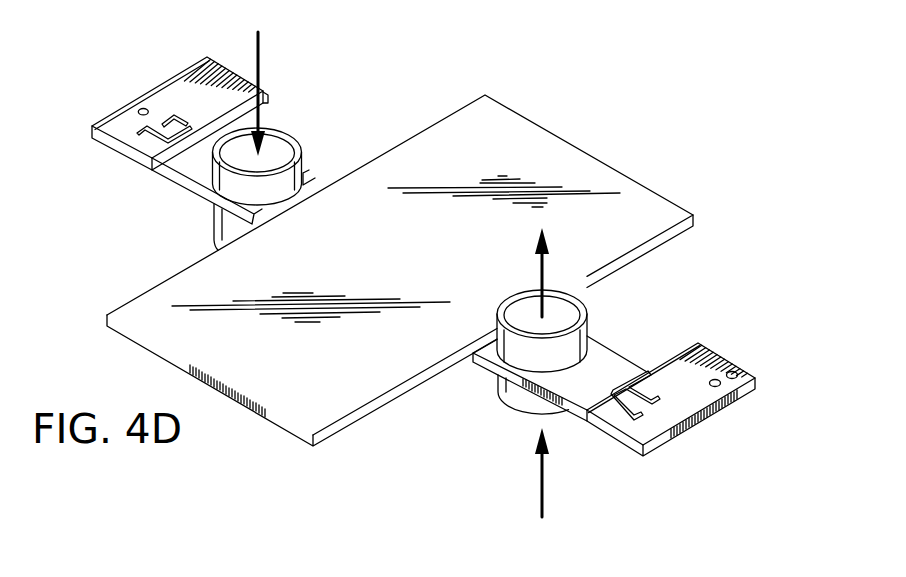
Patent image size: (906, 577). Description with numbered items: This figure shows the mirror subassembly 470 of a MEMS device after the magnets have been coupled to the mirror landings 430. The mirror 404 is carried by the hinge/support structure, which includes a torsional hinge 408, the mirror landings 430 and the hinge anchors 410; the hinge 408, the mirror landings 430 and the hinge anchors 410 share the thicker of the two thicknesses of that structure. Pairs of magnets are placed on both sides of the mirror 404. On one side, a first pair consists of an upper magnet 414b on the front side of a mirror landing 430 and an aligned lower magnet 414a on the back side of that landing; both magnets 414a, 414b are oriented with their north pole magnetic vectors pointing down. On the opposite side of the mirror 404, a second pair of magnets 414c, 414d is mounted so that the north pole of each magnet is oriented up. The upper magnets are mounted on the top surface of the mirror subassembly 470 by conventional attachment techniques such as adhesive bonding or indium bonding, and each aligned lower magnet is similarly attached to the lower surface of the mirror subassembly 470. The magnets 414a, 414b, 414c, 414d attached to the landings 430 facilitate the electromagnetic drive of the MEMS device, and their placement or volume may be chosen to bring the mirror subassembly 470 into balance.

The mirror 404 is at (448, 115).
The hinge 408 is at (612, 380).
The hinge anchors 410 is at (746, 367).
The magnet 414a is at (214, 214).
The magnet 414b is at (289, 131).
The magnet 414c is at (523, 300).
The magnet 414d is at (497, 380).
The mirror landing 430 is at (196, 171).
The mirror subassembly 470 is at (647, 90).